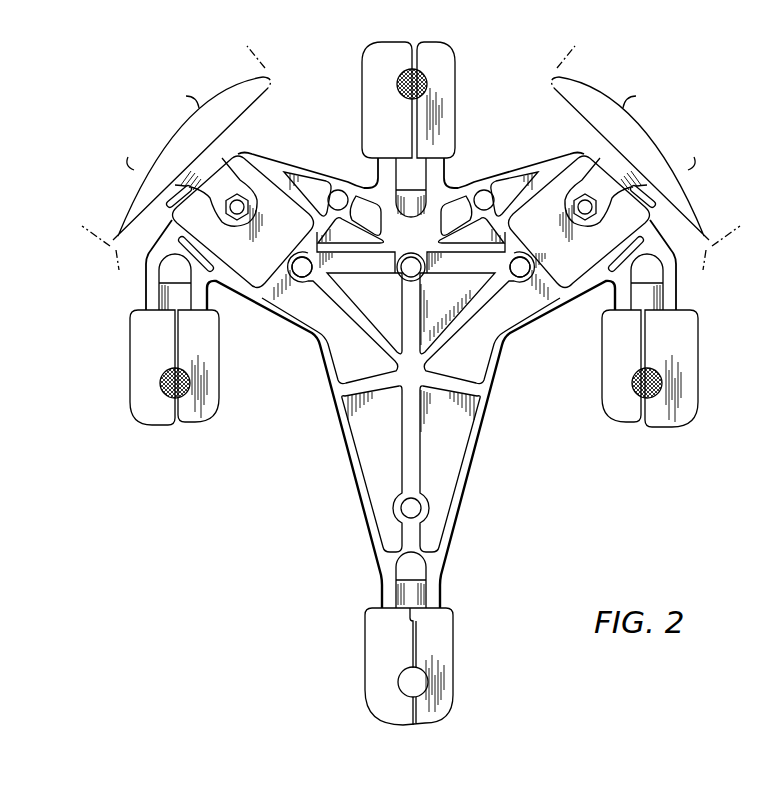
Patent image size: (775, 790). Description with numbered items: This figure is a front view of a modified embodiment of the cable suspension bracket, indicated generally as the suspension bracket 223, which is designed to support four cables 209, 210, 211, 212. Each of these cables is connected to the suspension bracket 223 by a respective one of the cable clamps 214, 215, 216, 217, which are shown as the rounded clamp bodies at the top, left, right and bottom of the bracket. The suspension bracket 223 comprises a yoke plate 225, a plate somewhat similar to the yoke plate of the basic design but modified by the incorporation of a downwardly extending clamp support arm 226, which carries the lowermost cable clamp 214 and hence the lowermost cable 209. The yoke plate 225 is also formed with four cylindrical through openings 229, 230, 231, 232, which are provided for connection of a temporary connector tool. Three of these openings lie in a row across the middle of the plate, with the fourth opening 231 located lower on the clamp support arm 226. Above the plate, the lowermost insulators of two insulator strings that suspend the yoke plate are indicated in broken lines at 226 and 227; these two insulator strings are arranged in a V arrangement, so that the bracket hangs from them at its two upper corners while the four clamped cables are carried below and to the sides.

The cable 209 is at (422, 688).
The cable 210 is at (163, 377).
The cable 211 is at (664, 383).
The cable 212 is at (399, 95).
The cable clamp 214 is at (433, 648).
The cable clamp 215 is at (204, 393).
The cable clamp 216 is at (676, 407).
The cable clamp 217 is at (444, 130).
The suspension bracket 223 is at (513, 357).
The yoke plate 225 is at (290, 320).
The clamp support arm 226 is at (441, 547).
The lowermost insulator 227 is at (118, 260).
The cylindrical through opening 229 is at (311, 268).
The cylindrical through opening 230 is at (509, 268).
The cylindrical through opening 231 is at (420, 508).
The cylindrical through opening 232 is at (416, 278).